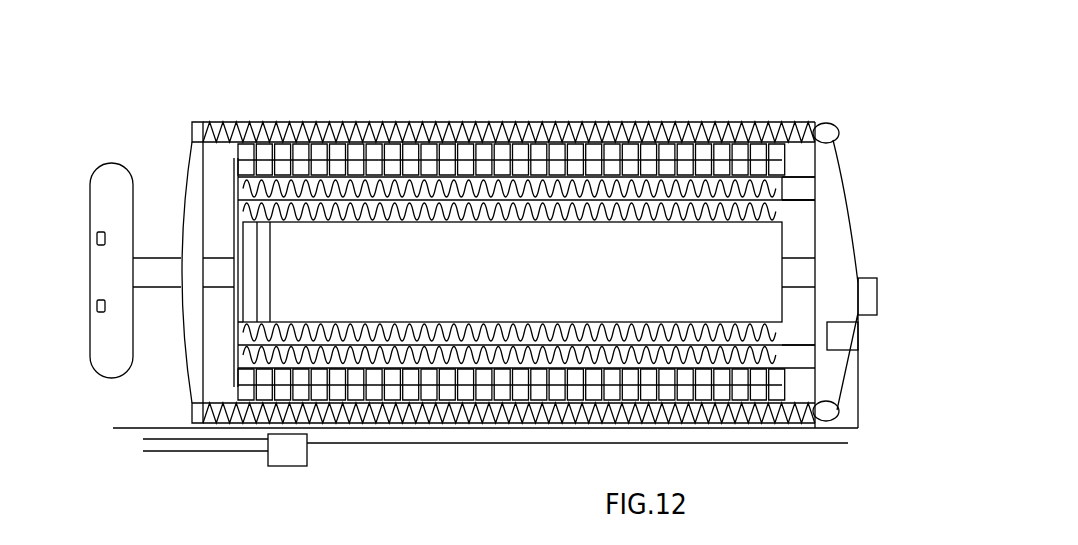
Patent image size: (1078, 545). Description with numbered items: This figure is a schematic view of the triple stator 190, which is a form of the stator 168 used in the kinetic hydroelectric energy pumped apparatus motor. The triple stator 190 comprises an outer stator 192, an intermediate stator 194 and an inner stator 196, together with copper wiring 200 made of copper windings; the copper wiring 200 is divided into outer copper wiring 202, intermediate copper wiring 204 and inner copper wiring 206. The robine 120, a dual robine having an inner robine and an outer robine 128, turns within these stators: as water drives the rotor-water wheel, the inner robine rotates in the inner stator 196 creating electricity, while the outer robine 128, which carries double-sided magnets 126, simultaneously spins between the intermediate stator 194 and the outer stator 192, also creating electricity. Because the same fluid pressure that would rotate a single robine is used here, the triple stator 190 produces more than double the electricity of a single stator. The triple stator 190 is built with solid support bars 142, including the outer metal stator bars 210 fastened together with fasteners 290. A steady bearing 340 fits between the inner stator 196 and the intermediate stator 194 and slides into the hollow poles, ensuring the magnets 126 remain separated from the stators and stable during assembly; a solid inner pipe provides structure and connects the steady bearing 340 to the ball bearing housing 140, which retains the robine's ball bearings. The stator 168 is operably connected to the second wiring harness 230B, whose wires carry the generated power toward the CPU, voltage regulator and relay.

The stator 168 is at (174, 234).
The triple stator 190 is at (214, 74).
The robine 120 is at (103, 198).
The magnets 126 is at (373, 133).
The outer robine 128 is at (432, 142).
The ball bearing housing 140 is at (847, 253).
The solid support bars 142 is at (155, 278).
The outer stator 192 is at (802, 125).
The intermediate stator 194 is at (800, 182).
The inner stator 196 is at (795, 200).
The copper wiring 200 is at (567, 275).
The outer copper wiring 202 is at (556, 275).
The intermediate copper wiring 204 is at (778, 188).
The inner copper wiring 206 is at (780, 212).
The outer metal stator bars 210 is at (883, 292).
The fasteners 290 is at (832, 125).
The steady bearing 340 is at (237, 207).
The second wiring harness 230B is at (282, 462).